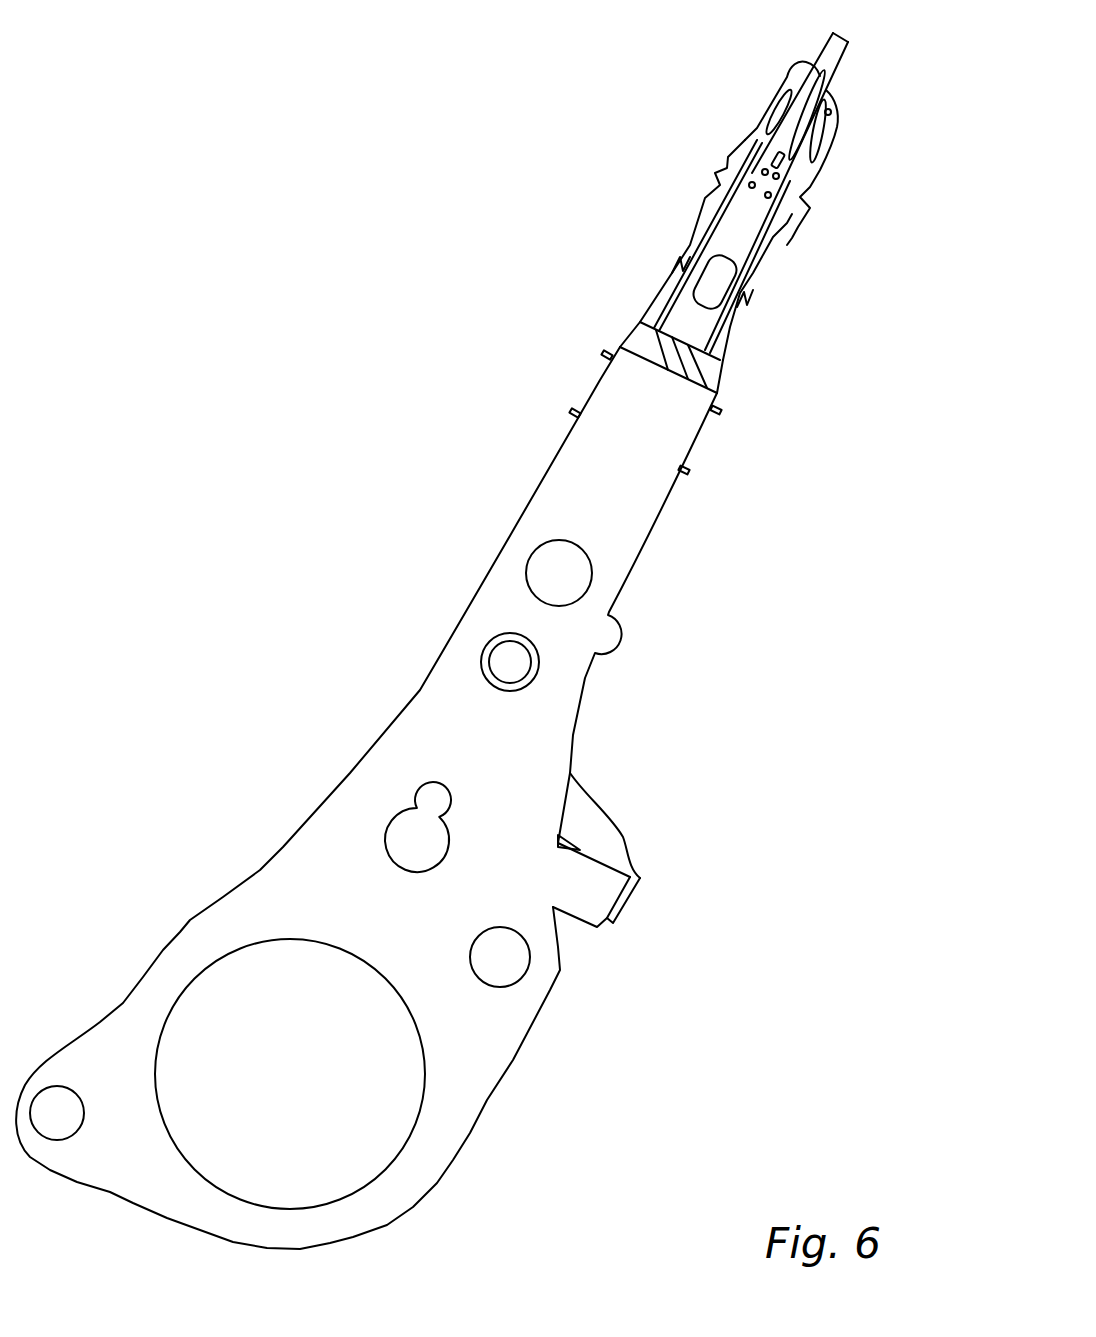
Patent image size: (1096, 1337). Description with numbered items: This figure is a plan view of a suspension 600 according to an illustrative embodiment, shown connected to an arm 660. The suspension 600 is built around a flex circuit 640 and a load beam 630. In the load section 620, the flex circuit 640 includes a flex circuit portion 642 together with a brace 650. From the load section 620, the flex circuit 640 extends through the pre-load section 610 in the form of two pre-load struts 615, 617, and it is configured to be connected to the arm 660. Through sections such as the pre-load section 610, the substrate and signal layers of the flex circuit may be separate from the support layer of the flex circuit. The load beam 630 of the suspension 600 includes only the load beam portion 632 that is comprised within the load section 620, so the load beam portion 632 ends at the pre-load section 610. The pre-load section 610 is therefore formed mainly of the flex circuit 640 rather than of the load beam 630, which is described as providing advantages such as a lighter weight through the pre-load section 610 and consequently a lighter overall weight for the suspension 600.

The suspension 600 is at (233, 177).
The pre-load section 610 is at (591, 303).
The pre-load strut 615 is at (620, 337).
The pre-load strut 617 is at (723, 390).
The load section 620 is at (775, 25).
The load beam 630 is at (789, 234).
The load beam portion 632 is at (820, 67).
The flex circuit 640 is at (818, 208).
The flex circuit portion 642 is at (810, 177).
The brace 650 is at (640, 290).
The arm 660 is at (410, 693).